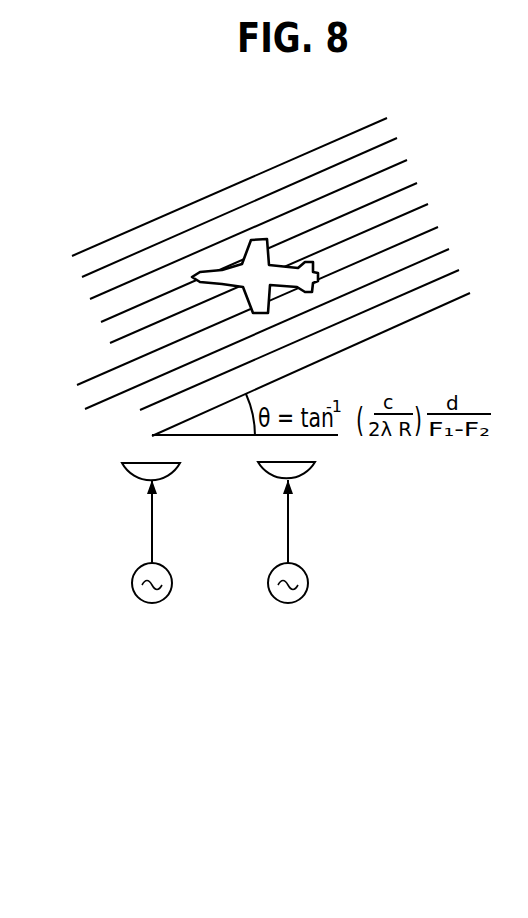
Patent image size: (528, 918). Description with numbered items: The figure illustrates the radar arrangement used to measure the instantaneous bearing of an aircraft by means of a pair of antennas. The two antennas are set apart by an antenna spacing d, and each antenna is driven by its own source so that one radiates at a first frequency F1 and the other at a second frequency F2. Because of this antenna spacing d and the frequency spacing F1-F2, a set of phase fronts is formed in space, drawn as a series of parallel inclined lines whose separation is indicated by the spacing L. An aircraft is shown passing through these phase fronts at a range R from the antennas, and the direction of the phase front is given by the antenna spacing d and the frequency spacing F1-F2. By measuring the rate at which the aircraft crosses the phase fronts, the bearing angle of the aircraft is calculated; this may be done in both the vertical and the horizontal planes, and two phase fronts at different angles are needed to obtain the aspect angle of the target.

The wavelength spacing of wavefronts L is at (110, 440).
The range to target aircraft R is at (238, 318).
The antenna spacing d is at (288, 522).
The first frequency F1 is at (152, 600).
The second frequency F2 is at (288, 600).